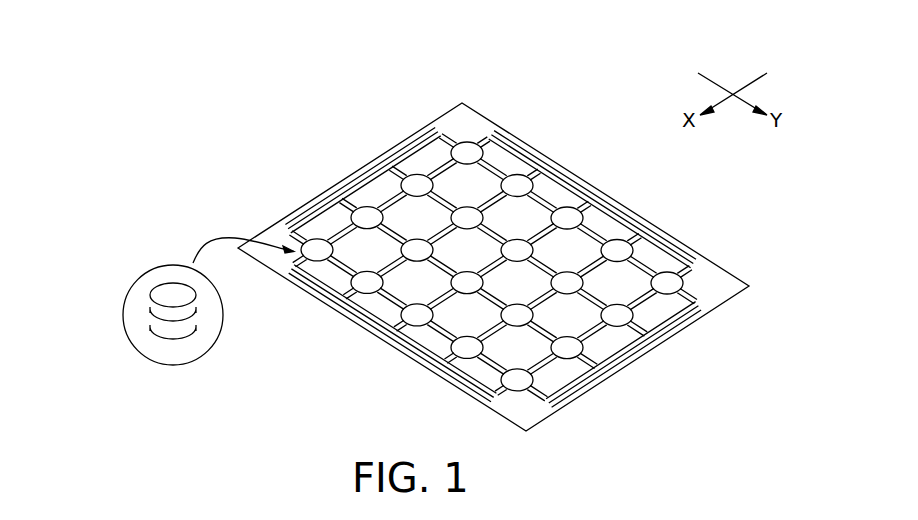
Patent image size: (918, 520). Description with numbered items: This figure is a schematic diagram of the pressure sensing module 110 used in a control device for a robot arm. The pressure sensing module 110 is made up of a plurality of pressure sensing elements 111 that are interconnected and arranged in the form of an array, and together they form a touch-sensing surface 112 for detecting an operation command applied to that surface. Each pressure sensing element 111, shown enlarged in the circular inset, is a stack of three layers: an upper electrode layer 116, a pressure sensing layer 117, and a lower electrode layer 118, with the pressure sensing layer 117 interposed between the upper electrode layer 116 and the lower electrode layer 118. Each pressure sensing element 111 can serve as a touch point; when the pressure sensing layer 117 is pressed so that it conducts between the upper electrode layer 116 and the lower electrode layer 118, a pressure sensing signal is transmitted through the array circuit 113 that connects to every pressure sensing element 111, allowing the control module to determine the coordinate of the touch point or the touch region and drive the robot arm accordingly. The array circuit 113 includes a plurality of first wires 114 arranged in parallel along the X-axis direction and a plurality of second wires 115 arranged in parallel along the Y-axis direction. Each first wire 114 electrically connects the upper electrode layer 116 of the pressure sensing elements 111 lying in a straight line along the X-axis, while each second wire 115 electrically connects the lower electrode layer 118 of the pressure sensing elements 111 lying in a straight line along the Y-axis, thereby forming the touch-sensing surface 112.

The pressure sensing module 110 is at (160, 38).
The pressure sensing element 111 is at (415, 182).
The touch-sensing surface 112 is at (308, 200).
The array circuit 113 is at (635, 88).
The first wire 114 is at (497, 207).
The second wire 115 is at (497, 168).
The upper electrode layer 116 is at (163, 292).
The pressure sensing layer 117 is at (157, 308).
The lower electrode layer 118 is at (160, 333).